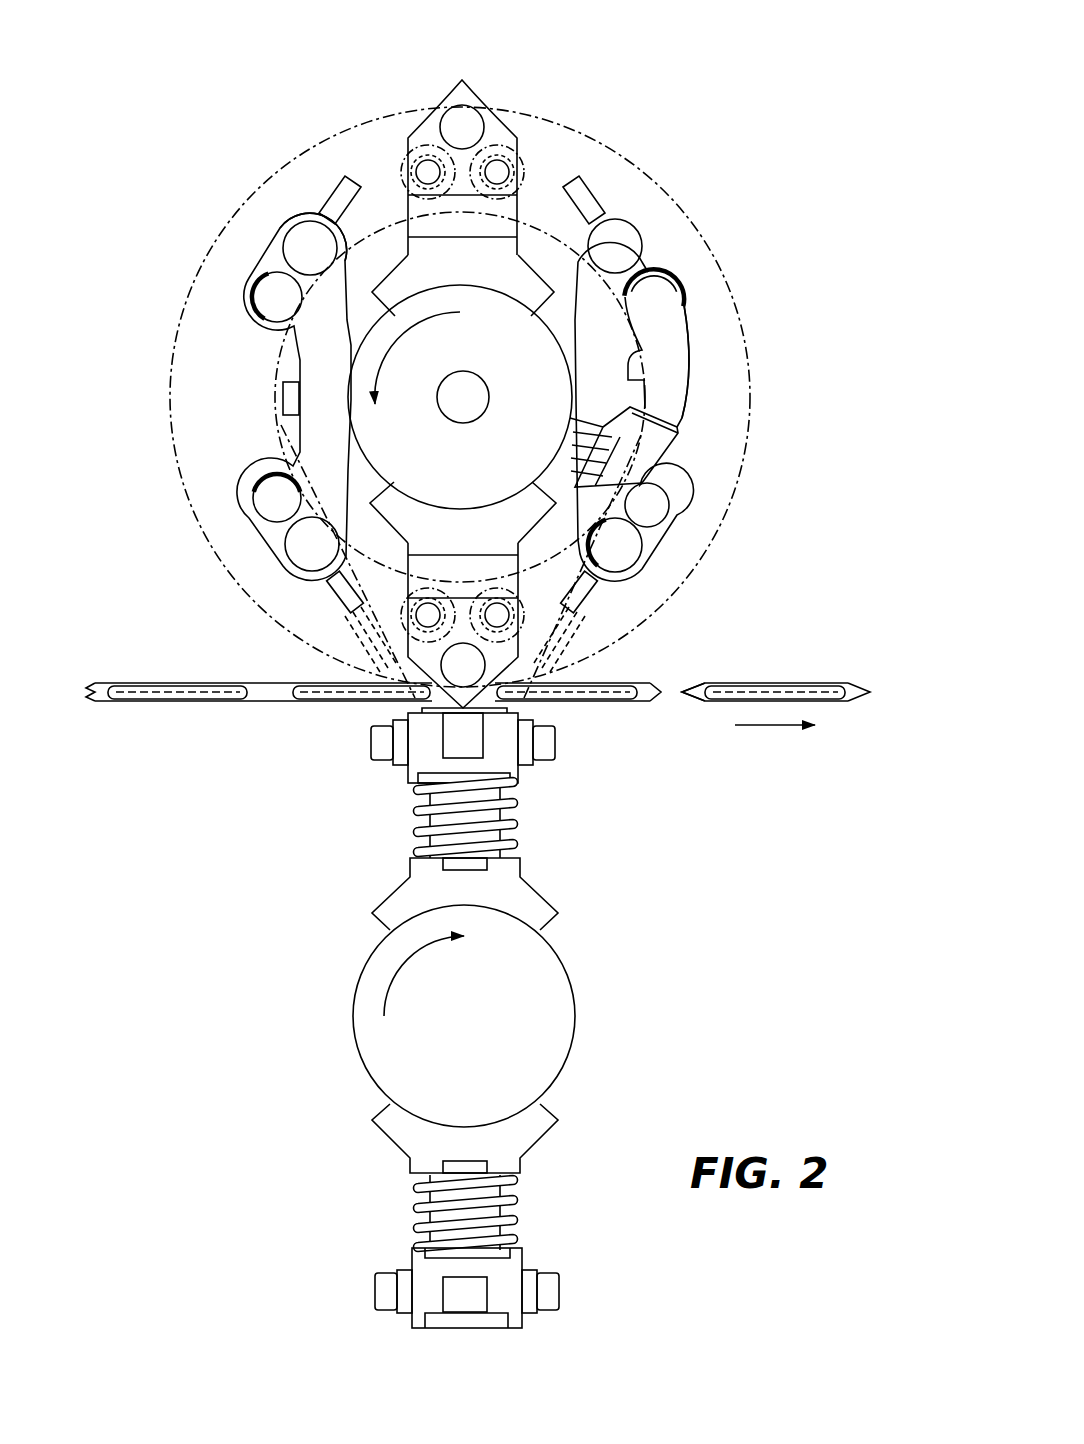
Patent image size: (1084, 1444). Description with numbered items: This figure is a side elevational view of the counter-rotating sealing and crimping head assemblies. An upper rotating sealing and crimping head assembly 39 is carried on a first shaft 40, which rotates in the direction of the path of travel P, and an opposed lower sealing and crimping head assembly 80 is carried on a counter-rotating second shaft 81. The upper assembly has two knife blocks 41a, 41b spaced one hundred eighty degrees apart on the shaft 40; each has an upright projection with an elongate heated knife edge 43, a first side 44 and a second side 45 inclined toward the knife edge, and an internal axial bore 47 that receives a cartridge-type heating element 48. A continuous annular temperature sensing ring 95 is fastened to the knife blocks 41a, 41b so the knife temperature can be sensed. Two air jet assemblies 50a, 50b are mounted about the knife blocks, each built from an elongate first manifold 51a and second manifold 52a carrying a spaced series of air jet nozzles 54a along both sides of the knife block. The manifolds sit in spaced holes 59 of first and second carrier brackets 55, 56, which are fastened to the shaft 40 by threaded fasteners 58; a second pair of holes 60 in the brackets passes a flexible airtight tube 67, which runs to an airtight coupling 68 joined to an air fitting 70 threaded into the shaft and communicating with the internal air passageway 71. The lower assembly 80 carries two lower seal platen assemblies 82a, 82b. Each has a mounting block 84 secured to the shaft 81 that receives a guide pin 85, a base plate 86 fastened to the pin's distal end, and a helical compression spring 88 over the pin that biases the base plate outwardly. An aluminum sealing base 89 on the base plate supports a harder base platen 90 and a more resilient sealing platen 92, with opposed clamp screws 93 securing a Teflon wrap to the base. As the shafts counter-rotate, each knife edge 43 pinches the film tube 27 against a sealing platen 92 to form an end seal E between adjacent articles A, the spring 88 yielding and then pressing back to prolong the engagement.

The upper rotating sealing and crimping head assembly 39 is at (148, 270).
The first shaft 40 is at (437, 462).
The knife block 41a is at (486, 279).
The knife block 41b is at (486, 547).
The knife edge 43 is at (462, 78).
The first side 44 is at (428, 124).
The second side 45 is at (495, 124).
The internal axial bore 47 is at (423, 124).
The heating element 48 is at (465, 126).
The air jet assembly 50a is at (681, 373).
The air jet assembly 50b is at (240, 415).
The first manifold 51a is at (645, 258).
The second manifold 52a is at (325, 232).
The air jet nozzles 54a is at (303, 240).
The first carrier bracket 55 is at (621, 247).
The second carrier bracket 56 is at (315, 448).
The threaded fasteners 58 is at (281, 399).
The spaced holes 59 is at (290, 247).
The second pair of holes 60 is at (270, 305).
The airtight tube 67 is at (670, 358).
The airtight coupling 68 is at (662, 442).
The air fitting 70 is at (654, 508).
The internal air passageway 71 is at (466, 397).
The temperature sensing ring 95 is at (665, 611).
The tube 27 is at (94, 682).
The article A is at (150, 700).
The end seal E is at (688, 692).
The path of travel P is at (768, 727).
The lower sealing and crimping head assembly 80 is at (451, 1018).
The second shaft 81 is at (488, 1038).
The lower seal platen assembly 82a is at (370, 1214).
The lower seal platen assembly 82b is at (470, 793).
The mounting block 84 is at (527, 908).
The guide pin 85 is at (420, 803).
The base plate 86 is at (498, 780).
The compression spring 88 is at (431, 847).
The sealing base 89 is at (411, 766).
The base platen 90 is at (470, 757).
The sealing platen 92 is at (418, 708).
The clamp screws 93 is at (372, 740).